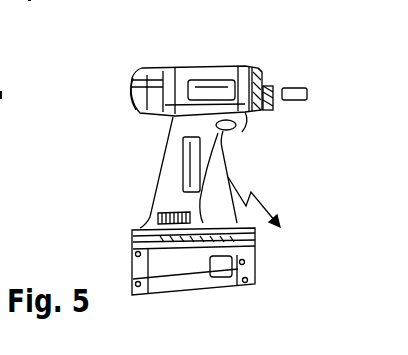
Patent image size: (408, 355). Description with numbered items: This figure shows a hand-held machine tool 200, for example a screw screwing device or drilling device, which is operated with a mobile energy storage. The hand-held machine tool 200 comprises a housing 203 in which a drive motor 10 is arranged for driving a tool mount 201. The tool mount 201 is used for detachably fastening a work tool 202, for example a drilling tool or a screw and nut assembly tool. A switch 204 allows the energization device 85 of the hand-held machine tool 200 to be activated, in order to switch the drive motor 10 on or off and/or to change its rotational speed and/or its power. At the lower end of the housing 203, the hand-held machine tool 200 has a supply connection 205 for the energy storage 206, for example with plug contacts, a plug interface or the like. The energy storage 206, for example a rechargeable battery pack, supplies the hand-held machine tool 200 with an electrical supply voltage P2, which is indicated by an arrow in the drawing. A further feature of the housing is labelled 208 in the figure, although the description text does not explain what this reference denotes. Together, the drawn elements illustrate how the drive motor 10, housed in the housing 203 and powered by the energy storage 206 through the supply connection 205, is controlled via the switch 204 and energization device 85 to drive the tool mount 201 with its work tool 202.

The drive motor 10 is at (204, 66).
The energization device 85 is at (183, 157).
The hand-held machine tool 200 is at (262, 75).
The tool mount 201 is at (276, 103).
The work tool 202 is at (292, 88).
The housing 203 is at (142, 81).
The switch 204 is at (228, 152).
The supply connection 205 is at (146, 230).
The energy storage 206 is at (253, 287).
The housing joint line 208 is at (255, 78).
The electrical supply voltage P2 is at (258, 202).